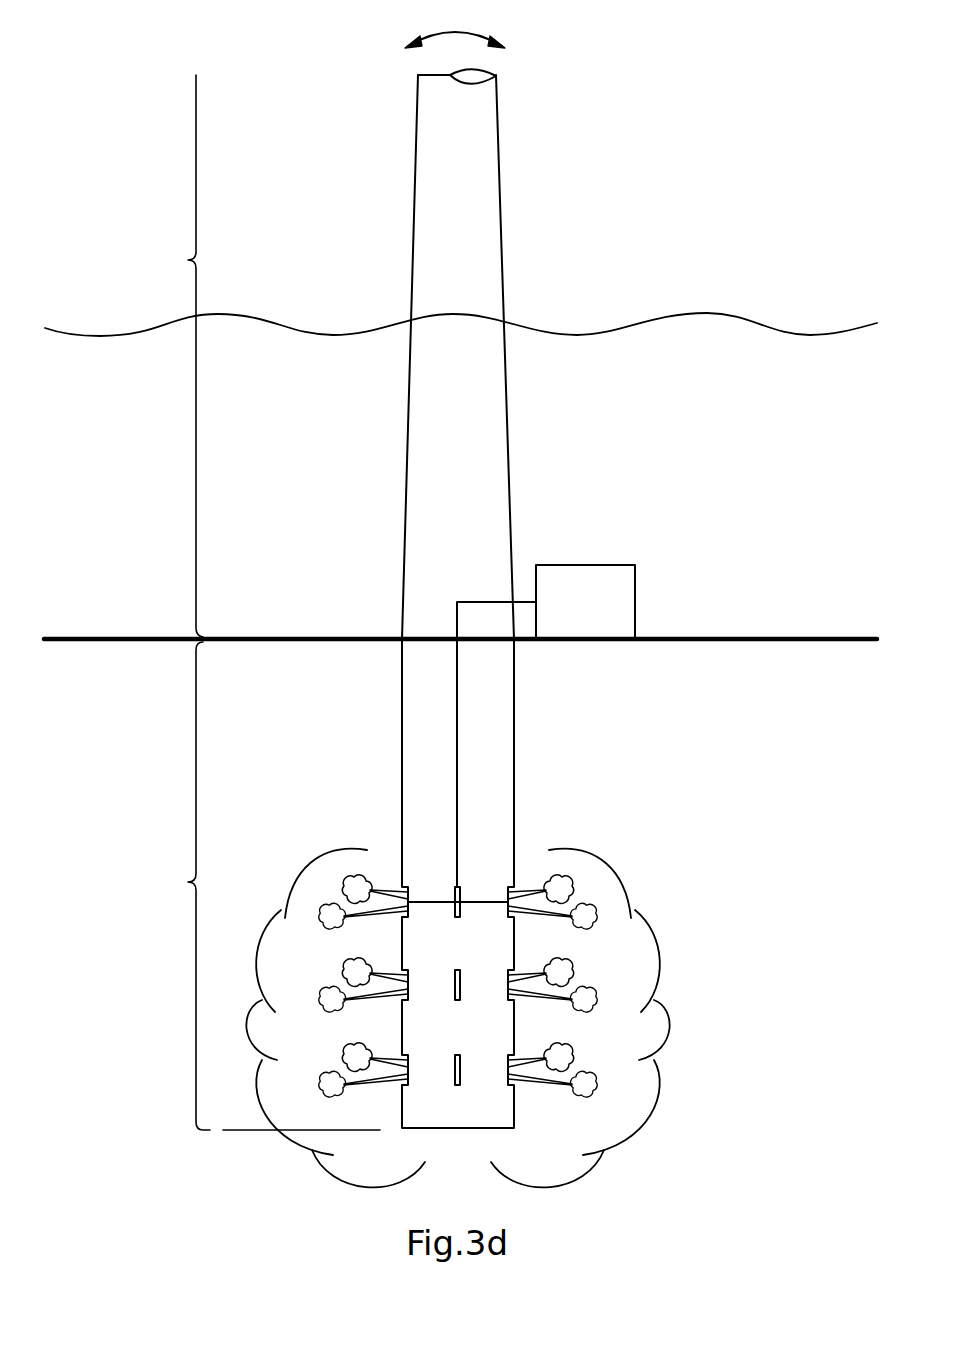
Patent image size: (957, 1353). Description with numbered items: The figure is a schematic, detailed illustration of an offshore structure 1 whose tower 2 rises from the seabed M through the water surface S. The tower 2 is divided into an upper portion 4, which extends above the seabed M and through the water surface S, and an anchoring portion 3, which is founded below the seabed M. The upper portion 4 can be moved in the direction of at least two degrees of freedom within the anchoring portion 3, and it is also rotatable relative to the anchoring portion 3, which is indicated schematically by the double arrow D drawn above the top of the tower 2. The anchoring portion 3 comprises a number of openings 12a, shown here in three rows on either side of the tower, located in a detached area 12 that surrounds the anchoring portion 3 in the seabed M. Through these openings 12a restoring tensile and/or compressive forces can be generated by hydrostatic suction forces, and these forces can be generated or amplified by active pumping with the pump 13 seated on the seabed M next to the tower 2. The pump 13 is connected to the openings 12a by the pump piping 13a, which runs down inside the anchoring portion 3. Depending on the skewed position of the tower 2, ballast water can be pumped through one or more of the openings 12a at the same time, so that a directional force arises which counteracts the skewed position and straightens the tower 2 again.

The offshore structure 1 is at (592, 89).
The tower 2 is at (480, 150).
The anchoring portion 3 is at (273, 886).
The upper portion 4 is at (184, 356).
The fluidized soil zone / injected fluid cloud 12 is at (670, 951).
The openings 12a is at (459, 988).
The pump 13 is at (618, 606).
The pump piping 13a is at (458, 778).
The double arrow D is at (455, 25).
The water surface S is at (108, 334).
The seabed M is at (760, 636).